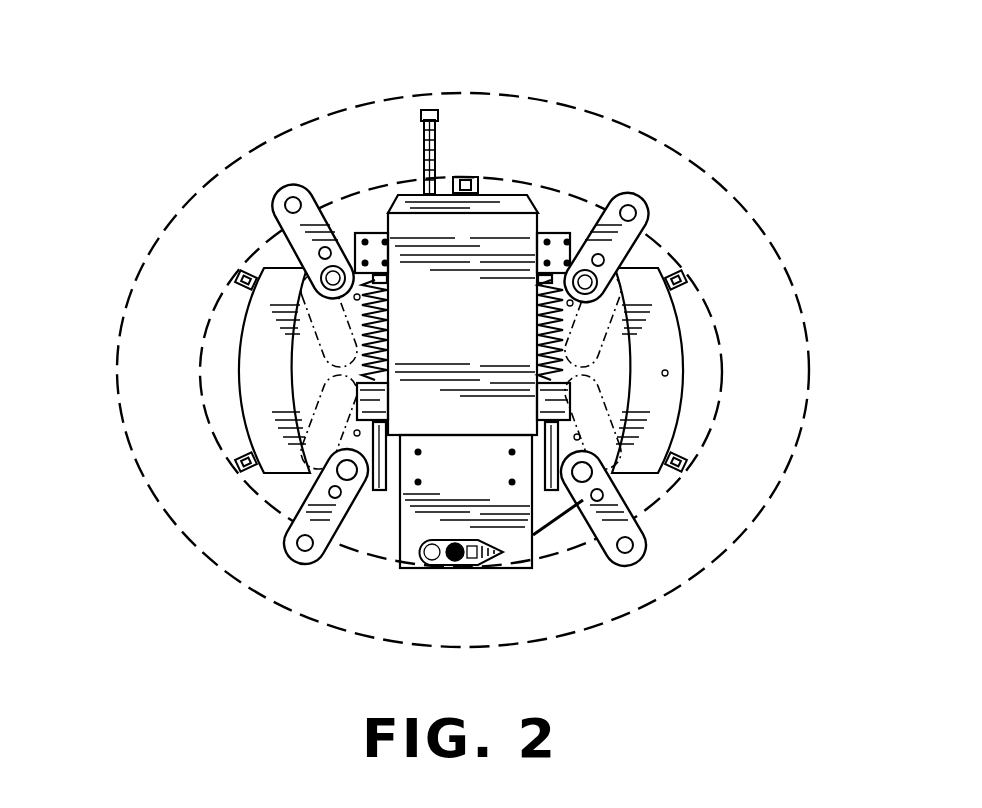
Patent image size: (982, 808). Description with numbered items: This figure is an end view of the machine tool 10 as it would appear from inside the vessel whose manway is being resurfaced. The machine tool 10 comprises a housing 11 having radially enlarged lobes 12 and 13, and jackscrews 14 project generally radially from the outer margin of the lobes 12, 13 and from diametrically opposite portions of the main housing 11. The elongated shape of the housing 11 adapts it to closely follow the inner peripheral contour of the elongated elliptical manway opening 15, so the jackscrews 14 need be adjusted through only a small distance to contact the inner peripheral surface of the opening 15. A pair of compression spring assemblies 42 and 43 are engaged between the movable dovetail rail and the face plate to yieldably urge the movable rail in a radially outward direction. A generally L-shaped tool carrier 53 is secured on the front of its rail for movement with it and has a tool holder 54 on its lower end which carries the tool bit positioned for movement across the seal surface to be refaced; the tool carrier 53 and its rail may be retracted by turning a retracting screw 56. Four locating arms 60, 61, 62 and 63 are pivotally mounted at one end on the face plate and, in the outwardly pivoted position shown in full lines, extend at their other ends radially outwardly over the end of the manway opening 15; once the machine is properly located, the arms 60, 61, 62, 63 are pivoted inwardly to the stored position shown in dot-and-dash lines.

The machine tool 10 is at (788, 204).
The housing 11 is at (562, 514).
The radially enlarged lobe 12 is at (700, 367).
The radially enlarged lobe 13 is at (214, 378).
The jackscrew 14 is at (480, 182).
The manway opening 15 is at (697, 196).
The compression spring assembly 42 is at (388, 340).
The compression spring assembly 43 is at (540, 353).
The tool carrier 53 is at (417, 523).
The tool holder 54 is at (462, 567).
The retracting screw 56 is at (418, 143).
The locating arm 60 is at (598, 555).
The locating arm 61 is at (605, 228).
The locating arm 62 is at (298, 183).
The locating arm 63 is at (305, 525).